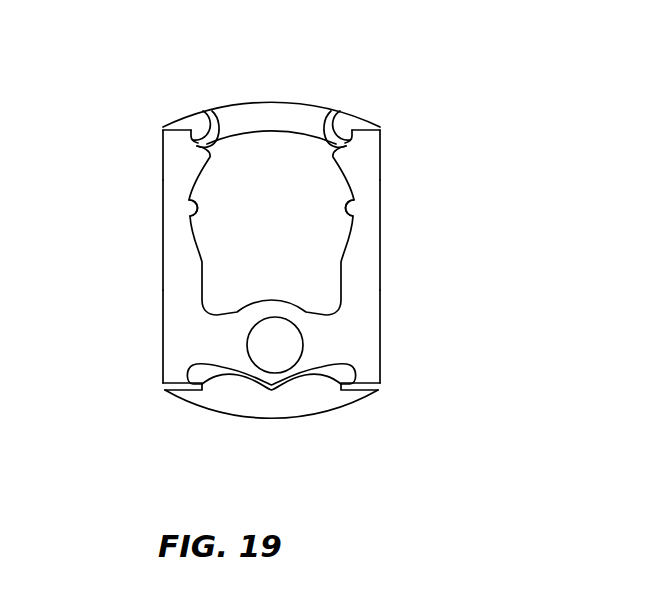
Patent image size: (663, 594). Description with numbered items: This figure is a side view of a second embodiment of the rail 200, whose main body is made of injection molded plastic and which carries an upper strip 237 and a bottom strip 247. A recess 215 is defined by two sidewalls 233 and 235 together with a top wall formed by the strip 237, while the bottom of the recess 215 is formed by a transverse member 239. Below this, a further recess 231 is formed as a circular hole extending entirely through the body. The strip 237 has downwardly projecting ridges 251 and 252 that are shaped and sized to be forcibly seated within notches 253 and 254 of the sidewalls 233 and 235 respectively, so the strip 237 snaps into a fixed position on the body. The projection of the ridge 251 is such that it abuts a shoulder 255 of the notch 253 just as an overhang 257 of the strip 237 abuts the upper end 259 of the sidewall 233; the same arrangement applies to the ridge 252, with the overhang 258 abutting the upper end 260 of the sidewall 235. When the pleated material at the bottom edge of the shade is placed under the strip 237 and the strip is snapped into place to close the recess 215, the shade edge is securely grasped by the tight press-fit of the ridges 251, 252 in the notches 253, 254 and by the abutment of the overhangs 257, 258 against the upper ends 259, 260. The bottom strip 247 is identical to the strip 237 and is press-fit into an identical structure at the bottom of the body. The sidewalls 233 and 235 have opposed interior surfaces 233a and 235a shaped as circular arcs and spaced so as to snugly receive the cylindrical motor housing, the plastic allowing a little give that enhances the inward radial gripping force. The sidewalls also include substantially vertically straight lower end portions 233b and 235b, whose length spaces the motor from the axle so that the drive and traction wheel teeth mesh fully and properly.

The rail 200 is at (492, 199).
The recess 215 is at (292, 224).
The recess 231 is at (293, 372).
The sidewall 233 is at (360, 244).
The interior surface 233a is at (360, 214).
The lower end portion 233b is at (360, 292).
The sidewall 235 is at (180, 231).
The interior surface 235a is at (187, 216).
The lower end portion 235b is at (188, 299).
The upper strip 237 is at (264, 118).
The transverse member 239 is at (213, 318).
The bottom strip 247 is at (220, 400).
The ridge 251 is at (332, 134).
The ridge 252 is at (195, 126).
The notch 253 is at (350, 124).
The notch 254 is at (212, 108).
The shoulder 255 is at (372, 168).
The overhang 257 is at (360, 120).
The overhang 258 is at (184, 118).
The upper end 259 is at (363, 137).
The upper end 260 is at (172, 141).